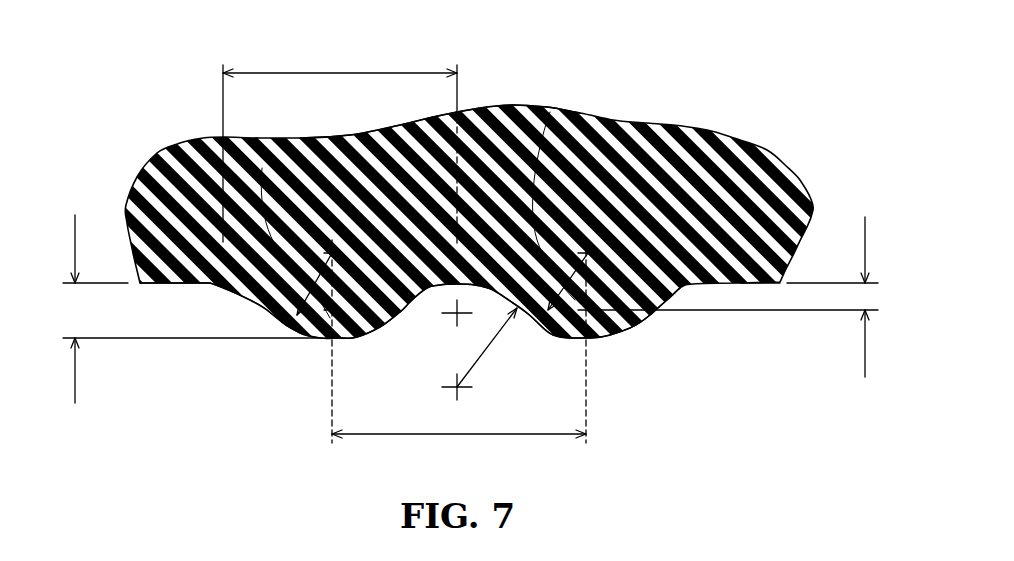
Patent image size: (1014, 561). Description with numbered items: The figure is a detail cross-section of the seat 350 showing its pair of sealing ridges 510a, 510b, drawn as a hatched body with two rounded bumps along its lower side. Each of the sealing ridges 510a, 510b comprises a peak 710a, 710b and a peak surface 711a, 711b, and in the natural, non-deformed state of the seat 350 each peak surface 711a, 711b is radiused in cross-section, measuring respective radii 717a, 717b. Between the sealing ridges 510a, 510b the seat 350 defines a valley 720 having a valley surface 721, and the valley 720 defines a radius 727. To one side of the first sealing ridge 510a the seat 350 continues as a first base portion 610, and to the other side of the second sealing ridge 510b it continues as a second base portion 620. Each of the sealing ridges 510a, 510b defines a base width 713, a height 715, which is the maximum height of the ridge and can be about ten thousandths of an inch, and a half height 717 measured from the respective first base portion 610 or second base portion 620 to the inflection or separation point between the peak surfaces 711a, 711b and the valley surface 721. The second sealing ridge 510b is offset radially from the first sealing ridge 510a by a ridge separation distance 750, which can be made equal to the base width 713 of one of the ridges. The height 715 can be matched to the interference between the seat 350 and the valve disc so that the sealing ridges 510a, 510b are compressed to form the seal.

The seat 350 is at (650, 60).
The base width 713 is at (357, 73).
The radius of first peak surface 717a is at (262, 168).
The valley 720 is at (410, 125).
The radius of second peak surface 717b is at (550, 112).
The half height 717 is at (873, 300).
The height 715 is at (73, 316).
The first base portion 610 is at (173, 284).
The second base portion 620 is at (727, 284).
The peak of first sealing ridge 710a is at (307, 337).
The peak of second sealing ridge 710b is at (613, 336).
The valley surface 721 is at (428, 288).
The peak surface of first sealing ridge 711a is at (355, 343).
The peak surface of second sealing ridge 711b is at (553, 342).
The radius of valley 727 is at (488, 348).
The ridge separation distance 750 is at (455, 434).
The first sealing ridge 510a is at (327, 342).
The second sealing ridge 510b is at (591, 343).